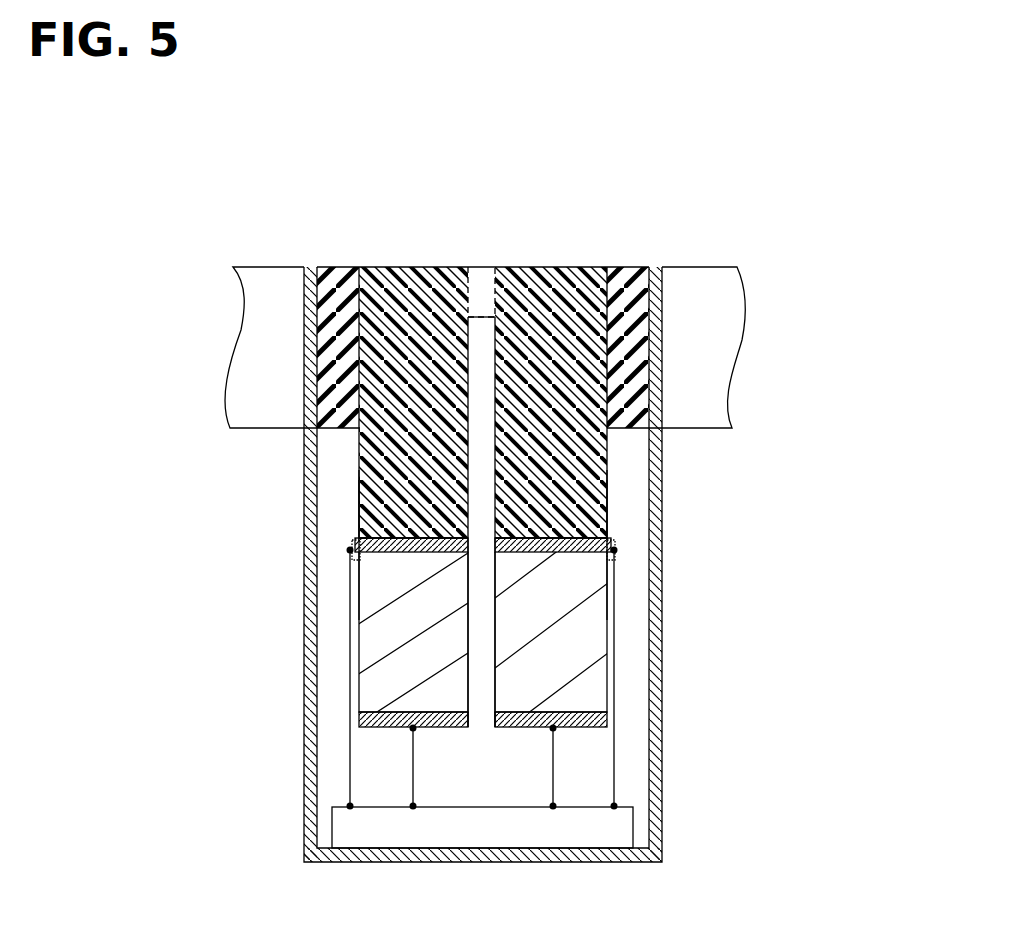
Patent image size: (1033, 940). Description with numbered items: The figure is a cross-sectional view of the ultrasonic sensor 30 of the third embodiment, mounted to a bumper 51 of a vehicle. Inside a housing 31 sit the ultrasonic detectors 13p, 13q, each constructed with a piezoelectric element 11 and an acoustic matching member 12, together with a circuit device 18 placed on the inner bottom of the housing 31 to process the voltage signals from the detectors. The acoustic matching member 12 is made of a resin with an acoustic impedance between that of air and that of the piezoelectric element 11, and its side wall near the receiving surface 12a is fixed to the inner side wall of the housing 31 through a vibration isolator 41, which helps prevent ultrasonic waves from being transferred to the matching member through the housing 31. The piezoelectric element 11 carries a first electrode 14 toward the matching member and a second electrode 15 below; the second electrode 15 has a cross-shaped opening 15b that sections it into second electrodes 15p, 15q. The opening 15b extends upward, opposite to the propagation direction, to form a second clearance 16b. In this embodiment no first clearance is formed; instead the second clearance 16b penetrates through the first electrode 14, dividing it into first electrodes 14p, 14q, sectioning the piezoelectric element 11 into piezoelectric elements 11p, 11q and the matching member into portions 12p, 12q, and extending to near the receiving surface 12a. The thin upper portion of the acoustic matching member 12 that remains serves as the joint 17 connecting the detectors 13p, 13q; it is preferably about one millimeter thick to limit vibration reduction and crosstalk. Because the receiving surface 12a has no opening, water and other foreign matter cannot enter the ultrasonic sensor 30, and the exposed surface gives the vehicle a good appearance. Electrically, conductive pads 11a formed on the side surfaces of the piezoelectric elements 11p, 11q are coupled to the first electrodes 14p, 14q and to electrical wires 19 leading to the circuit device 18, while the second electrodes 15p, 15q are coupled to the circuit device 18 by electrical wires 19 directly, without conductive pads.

The piezoelectric element 11 is at (616, 692).
The conductive pad 11a is at (350, 550).
The piezoelectric element 11p is at (370, 568).
The piezoelectric element 11q is at (607, 567).
The acoustic matching member 12 is at (616, 462).
The receiving surface 12a is at (388, 268).
The acoustic matching member portion 12p is at (360, 511).
The acoustic matching member portion 12q is at (607, 490).
The ultrasonic detector 13p is at (170, 498).
The ultrasonic detector 13q is at (787, 483).
The first electrode 14 is at (483, 545).
The first electrode 14p is at (423, 552).
The first electrode 14q is at (547, 553).
The second electrode 15 is at (483, 719).
The second electrode 15p is at (360, 717).
The second electrode 15q is at (607, 717).
The opening 15b is at (469, 727).
The second clearance 16b is at (490, 437).
The joint 17 is at (487, 268).
The circuit device 18 is at (352, 827).
The electrical wire 19 is at (350, 762).
The ultrasonic sensor 30 is at (767, 203).
The housing 31 is at (655, 827).
The vibration isolator 41 is at (333, 272).
The bumper 51 is at (262, 270).